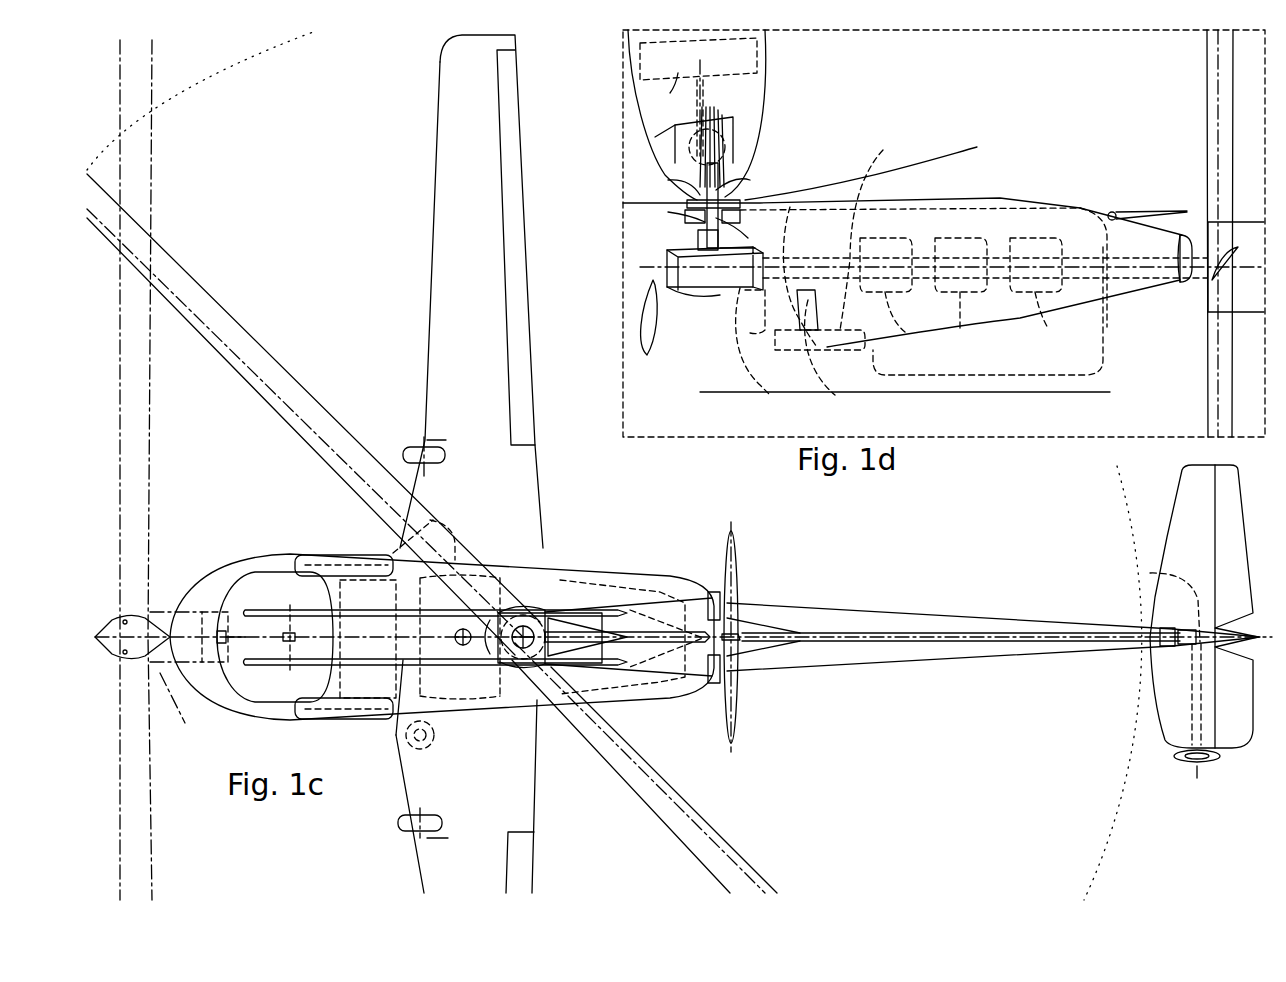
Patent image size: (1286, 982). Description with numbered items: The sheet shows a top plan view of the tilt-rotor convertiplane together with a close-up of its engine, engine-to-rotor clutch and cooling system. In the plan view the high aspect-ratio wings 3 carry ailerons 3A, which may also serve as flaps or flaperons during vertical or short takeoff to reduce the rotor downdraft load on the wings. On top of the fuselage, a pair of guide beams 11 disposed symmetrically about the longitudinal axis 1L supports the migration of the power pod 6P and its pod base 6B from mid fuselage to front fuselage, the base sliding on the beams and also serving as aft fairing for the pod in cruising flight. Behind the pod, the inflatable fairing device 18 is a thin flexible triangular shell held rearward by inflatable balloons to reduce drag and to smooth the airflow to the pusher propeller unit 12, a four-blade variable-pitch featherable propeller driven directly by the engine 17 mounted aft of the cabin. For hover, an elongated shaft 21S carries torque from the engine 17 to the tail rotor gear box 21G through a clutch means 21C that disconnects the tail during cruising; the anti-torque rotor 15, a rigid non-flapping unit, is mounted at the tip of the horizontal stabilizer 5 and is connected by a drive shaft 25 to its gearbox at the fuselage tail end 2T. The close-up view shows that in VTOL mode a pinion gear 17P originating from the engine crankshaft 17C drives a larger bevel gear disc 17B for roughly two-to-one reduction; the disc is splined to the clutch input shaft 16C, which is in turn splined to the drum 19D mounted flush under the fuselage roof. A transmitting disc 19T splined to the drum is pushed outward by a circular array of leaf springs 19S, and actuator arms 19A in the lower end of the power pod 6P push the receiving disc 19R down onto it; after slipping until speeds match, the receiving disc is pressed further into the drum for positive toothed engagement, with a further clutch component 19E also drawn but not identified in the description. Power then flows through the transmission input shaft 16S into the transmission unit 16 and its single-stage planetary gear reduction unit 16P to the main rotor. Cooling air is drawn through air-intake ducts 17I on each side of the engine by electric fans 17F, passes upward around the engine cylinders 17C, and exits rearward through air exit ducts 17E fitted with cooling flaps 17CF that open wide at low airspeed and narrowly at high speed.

In FIG. 1C, the wings 3 is at (421, 321).
In FIG. 1C, the ailerons 3A is at (521, 224).
In FIG. 1C, the power pod 6P is at (197, 575).
In FIG. 1D, the power pod 6P is at (796, 57).
In FIG. 1C, the pod base 6B is at (593, 630).
In FIG. 1C, the guide beams 11 is at (268, 608).
In FIG. 1C, the longitudinal axis 1L is at (394, 553).
In FIG. 1C, the inflatable fairing device 18 is at (553, 620).
In FIG. 1C, the pusher propeller unit 12 is at (760, 574).
In FIG. 1D, the pusher propeller unit 12 is at (1207, 385).
In FIG. 1C, the fuselage tail end 2T is at (1073, 653).
In FIG. 1C, the elongated shaft 21S is at (920, 633).
In FIG. 1C, the tail rotor gear box 21G is at (1150, 573).
In FIG. 1C, the clutch means 21C is at (1172, 628).
In FIG. 1C, the drive shaft 25 is at (1193, 684).
In FIG. 1C, the horizontal stabilizer 5 is at (1162, 723).
In FIG. 1C, the anti-torque rotor 15 is at (1183, 767).
In FIG. 1D, the transmission unit 16 is at (744, 83).
In FIG. 1D, the planetary gear reduction unit 16P is at (664, 95).
In FIG. 1D, the transmission input shaft 16S is at (708, 92).
In FIG. 1D, the clutch input shaft 16C is at (696, 228).
In FIG. 1D, the actuator arms 19A is at (680, 181).
In FIG. 1D, the receiving disc 19R is at (740, 180).
In FIG. 1D, the hub elastomeric bearing 19E is at (742, 200).
In FIG. 1D, the transmitting disc 19T is at (742, 212).
In FIG. 1D, the drum 19D is at (684, 212).
In FIG. 1D, the leaf springs 19S is at (735, 228).
In FIG. 1D, the engine 17 is at (995, 188).
In FIG. 1D, the engine crankshaft 17C is at (983, 345).
In FIG. 1D, the cooling flaps 17CF is at (1172, 212).
In FIG. 1D, the air exit ducts 17E is at (1189, 284).
In FIG. 1D, the bevel gear disc 17B is at (703, 273).
In FIG. 1D, the pinion gear 17P is at (737, 290).
In FIG. 1D, the air-intake ducts 17I is at (763, 392).
In FIG. 1D, the electric fans 17F is at (828, 392).